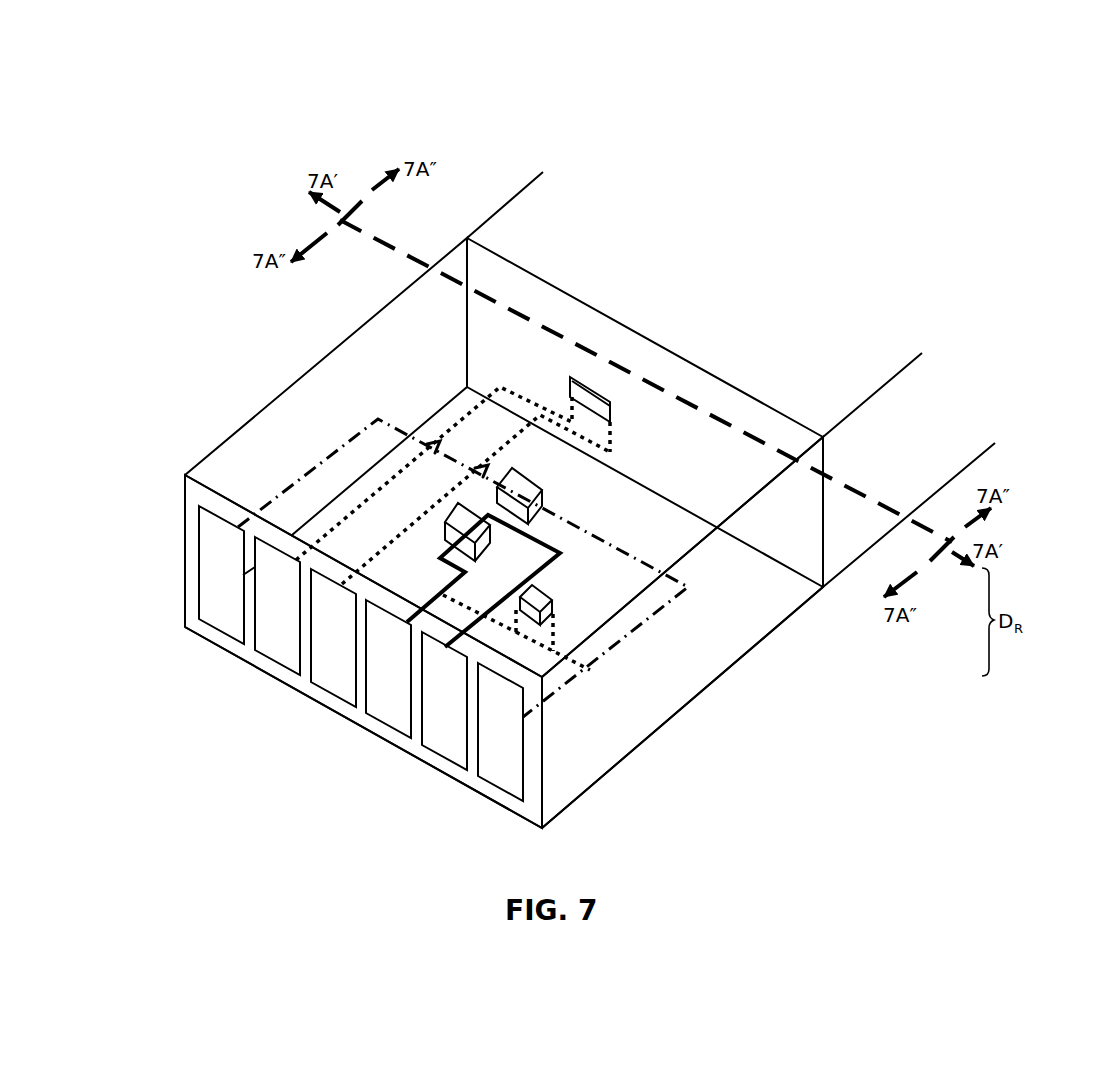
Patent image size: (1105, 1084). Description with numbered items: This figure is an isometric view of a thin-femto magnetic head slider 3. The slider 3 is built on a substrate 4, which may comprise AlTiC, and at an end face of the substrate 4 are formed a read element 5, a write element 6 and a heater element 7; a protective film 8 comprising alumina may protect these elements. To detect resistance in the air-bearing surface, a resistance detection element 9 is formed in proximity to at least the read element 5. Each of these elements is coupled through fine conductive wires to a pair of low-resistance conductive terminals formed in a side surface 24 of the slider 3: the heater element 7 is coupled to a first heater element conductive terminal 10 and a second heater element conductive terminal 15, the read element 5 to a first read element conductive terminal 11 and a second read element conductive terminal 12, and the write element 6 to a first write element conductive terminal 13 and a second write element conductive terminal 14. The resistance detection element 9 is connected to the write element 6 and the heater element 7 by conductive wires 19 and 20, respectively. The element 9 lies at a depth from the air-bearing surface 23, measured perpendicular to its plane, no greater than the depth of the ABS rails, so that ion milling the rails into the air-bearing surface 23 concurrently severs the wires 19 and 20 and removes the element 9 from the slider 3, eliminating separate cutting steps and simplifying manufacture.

The thin-femto magnetic head slider 3 is at (202, 172).
The substrate 4 is at (962, 457).
The read element 5 is at (570, 383).
The write element 6 is at (460, 519).
The heater element 7 is at (527, 489).
The protective film 8 is at (586, 745).
The resistance detection element 9 is at (540, 602).
The first heater element conductive terminal 10 is at (232, 586).
The first read element conductive terminal 11 is at (291, 619).
The second read element conductive terminal 12 is at (348, 646).
The first write element conductive terminal 13 is at (407, 687).
The second write element conductive terminal 14 is at (460, 716).
The second heater element conductive terminal 15 is at (516, 747).
The conductive wire 19 is at (463, 602).
The conductive wire 20 is at (562, 647).
The air-bearing surface 23 is at (457, 260).
The side surface 24 is at (198, 494).